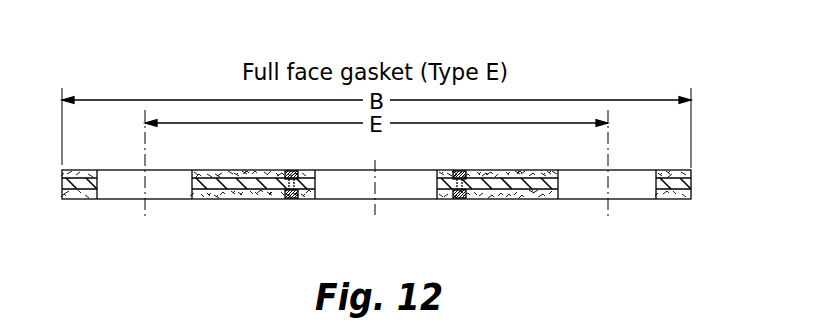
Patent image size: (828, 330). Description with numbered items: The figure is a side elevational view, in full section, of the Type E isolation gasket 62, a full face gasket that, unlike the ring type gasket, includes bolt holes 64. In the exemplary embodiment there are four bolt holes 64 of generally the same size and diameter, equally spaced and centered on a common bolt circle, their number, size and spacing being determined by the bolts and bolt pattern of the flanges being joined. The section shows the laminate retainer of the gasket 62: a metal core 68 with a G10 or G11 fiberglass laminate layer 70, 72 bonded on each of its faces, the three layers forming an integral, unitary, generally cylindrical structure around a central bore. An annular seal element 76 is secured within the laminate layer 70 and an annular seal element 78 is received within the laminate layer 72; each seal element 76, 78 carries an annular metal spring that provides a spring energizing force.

The Type E isolation gasket 62 is at (700, 131).
The bolt holes 64 is at (121, 188).
The metal core 68 is at (559, 178).
The fiberglass laminate layer 70 is at (534, 170).
The fiberglass laminate layer 72 is at (520, 199).
The annular seal element 76 is at (459, 171).
The annular seal element 78 is at (459, 199).